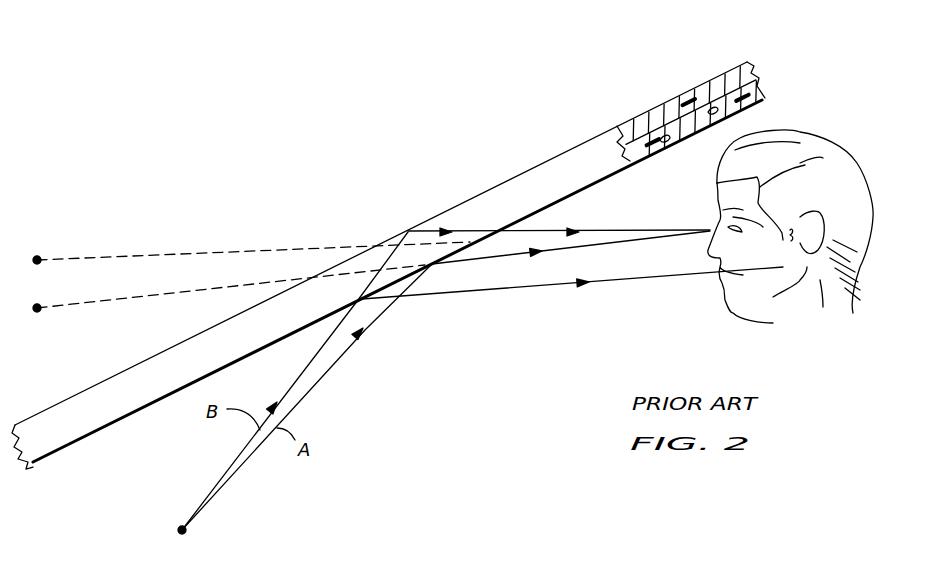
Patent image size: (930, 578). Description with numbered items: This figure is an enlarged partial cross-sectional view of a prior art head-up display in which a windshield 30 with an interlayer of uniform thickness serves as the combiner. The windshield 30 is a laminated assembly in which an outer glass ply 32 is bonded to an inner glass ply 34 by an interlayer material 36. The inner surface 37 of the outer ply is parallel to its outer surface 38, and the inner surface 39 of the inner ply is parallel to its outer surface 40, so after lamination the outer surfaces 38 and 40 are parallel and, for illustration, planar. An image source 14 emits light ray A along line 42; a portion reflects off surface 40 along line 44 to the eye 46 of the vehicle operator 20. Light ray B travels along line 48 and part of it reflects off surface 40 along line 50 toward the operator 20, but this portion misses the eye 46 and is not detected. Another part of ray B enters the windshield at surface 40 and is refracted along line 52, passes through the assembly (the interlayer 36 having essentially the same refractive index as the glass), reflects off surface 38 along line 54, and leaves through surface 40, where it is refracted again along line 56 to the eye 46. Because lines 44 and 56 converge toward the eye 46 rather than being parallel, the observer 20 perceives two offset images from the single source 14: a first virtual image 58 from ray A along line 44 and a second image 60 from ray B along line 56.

The image source 14 is at (182, 530).
The vehicle operator 20 is at (794, 215).
The windshield 30 is at (677, 105).
The outer glass ply 32 is at (747, 62).
The inner glass ply 34 is at (762, 99).
The interlayer material 36 is at (758, 80).
The inner surface of outer glass ply 37 is at (652, 125).
The outer surface of outer glass ply 38 is at (660, 107).
The inner surface of inner glass ply 39 is at (700, 118).
The outer surface of inner glass ply 40 is at (673, 143).
The line 42 is at (338, 363).
The line 44 is at (590, 247).
The eye 46 is at (747, 230).
The line 48 is at (295, 380).
The line 50 is at (494, 288).
The line 52 is at (372, 273).
The line 54 is at (425, 235).
The line 56 is at (605, 233).
The first image 58 is at (37, 308).
The second image 60 is at (37, 260).